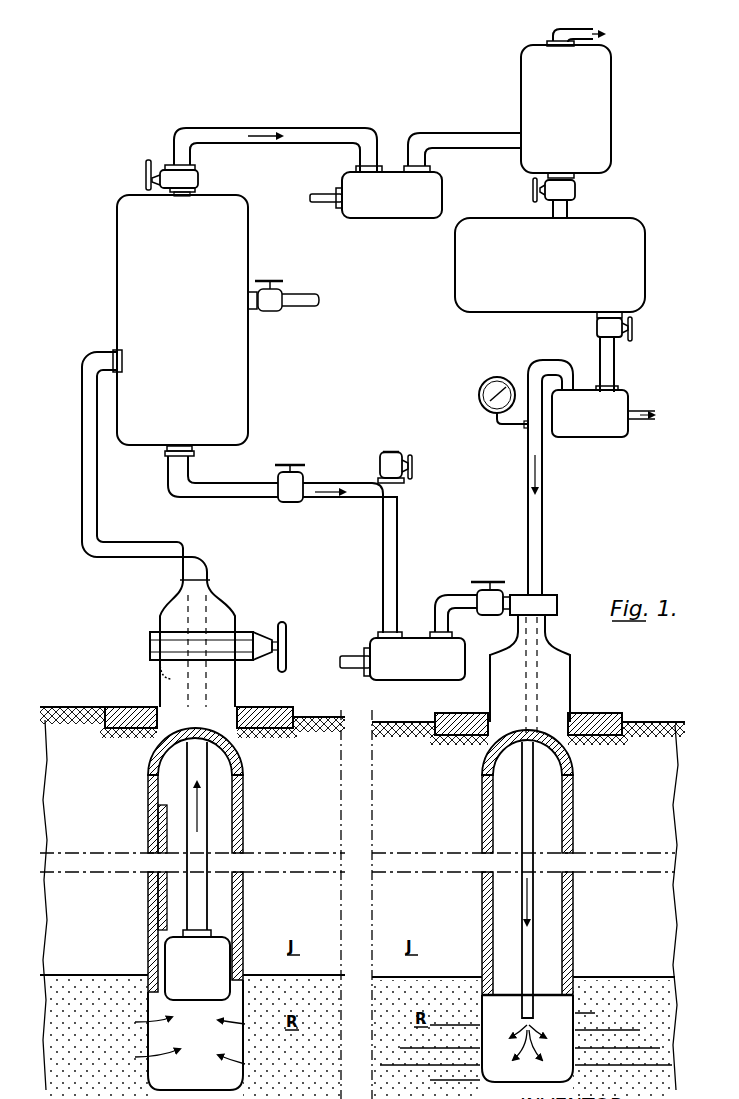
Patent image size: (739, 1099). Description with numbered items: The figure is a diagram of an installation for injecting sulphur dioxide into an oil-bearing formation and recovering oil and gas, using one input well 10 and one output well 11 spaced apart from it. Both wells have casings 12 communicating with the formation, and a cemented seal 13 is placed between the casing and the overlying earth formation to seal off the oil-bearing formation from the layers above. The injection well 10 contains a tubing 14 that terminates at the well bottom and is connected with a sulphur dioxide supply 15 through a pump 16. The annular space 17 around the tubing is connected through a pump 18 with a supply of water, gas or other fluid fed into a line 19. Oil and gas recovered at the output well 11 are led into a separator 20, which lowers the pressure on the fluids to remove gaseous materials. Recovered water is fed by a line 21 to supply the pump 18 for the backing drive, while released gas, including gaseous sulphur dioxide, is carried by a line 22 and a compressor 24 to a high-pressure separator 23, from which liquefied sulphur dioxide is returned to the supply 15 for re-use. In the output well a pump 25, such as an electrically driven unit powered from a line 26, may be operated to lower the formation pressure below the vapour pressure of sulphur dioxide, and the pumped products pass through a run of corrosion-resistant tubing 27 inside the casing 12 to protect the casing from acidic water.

The input well 10 is at (582, 704).
The output well 11 is at (145, 684).
The casing 12 is at (236, 818).
The cemented seal 13 is at (236, 950).
The tubing 14 is at (532, 787).
The sulphur dioxide supply 15 is at (467, 281).
The pump 16 is at (615, 402).
The annular space 17 is at (545, 848).
The pump 18 is at (383, 652).
The line 19 is at (393, 452).
The separator 20 is at (244, 407).
The line 21 is at (244, 482).
The line 22 is at (246, 128).
The high-pressure separator 23 is at (521, 106).
The compressor 24 is at (437, 197).
The pump 25 is at (180, 966).
The line 26 is at (160, 900).
The corrosion-resistant tubing 27 is at (193, 846).